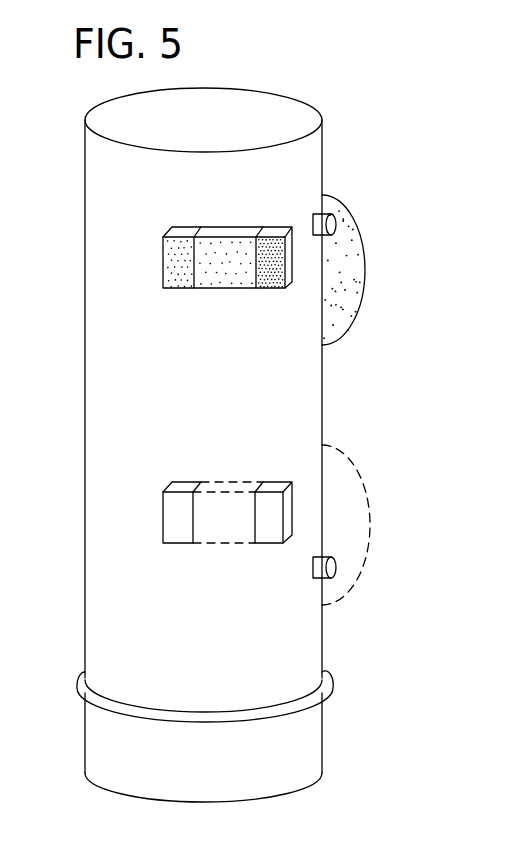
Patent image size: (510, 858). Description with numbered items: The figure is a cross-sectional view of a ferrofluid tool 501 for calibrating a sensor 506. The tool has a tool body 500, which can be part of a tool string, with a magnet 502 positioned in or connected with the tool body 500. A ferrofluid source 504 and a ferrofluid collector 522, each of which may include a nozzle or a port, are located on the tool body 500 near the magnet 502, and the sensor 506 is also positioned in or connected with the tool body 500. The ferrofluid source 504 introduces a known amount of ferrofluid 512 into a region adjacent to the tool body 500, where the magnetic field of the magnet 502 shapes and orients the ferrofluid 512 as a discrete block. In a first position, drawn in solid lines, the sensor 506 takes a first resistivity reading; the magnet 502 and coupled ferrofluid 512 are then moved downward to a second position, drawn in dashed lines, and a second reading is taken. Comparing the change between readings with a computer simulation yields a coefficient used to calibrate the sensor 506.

The tool body 500 is at (307, 148).
The ferrofluid tool 501 is at (295, 50).
The magnet 502 is at (222, 290).
The ferrofluid source 504 is at (313, 217).
The sensor 506 is at (327, 690).
The ferrofluid 512 is at (350, 288).
The ferrofluid collector 522 is at (313, 573).